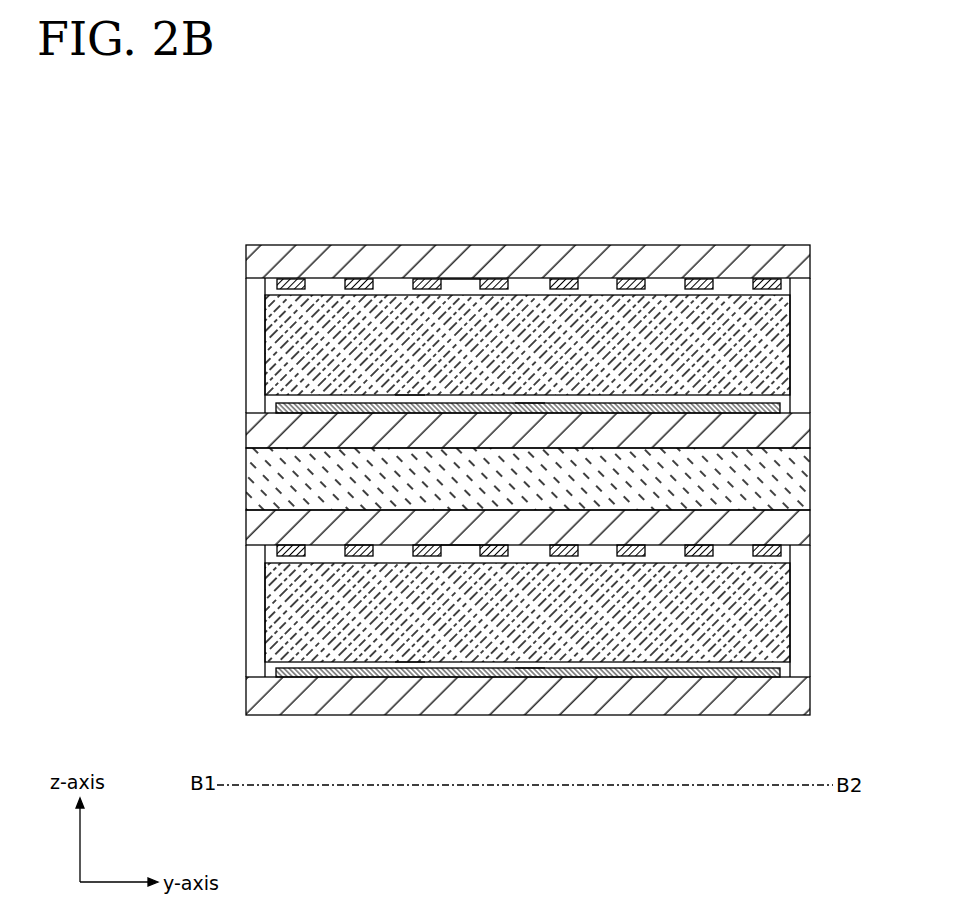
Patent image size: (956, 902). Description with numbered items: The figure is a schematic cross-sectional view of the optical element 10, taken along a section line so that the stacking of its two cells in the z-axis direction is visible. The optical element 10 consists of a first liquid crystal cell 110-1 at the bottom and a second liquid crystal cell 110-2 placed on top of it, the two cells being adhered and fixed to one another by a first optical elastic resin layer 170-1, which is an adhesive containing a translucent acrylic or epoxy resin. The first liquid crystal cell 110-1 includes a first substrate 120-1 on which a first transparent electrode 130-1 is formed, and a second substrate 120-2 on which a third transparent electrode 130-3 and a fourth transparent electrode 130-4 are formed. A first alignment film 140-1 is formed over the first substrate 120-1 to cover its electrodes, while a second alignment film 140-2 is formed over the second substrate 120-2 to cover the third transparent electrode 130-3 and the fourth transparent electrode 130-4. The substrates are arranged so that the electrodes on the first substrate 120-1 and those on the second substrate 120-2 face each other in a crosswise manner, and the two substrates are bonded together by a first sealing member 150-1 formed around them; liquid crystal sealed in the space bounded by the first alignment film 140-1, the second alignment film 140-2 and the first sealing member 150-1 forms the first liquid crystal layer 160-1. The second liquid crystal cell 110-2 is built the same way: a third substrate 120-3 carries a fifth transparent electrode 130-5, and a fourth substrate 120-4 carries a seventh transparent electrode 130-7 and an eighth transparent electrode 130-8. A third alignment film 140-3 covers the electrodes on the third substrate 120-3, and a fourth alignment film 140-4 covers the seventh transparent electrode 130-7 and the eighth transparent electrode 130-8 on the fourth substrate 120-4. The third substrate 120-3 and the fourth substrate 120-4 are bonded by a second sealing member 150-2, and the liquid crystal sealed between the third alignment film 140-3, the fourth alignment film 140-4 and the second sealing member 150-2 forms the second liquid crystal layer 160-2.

The optical element 10 is at (146, 142).
The first liquid crystal cell 110-1 is at (135, 510).
The second liquid crystal cell 110-2 is at (135, 243).
The first substrate 120-1 is at (246, 693).
The second substrate 120-2 is at (246, 527).
The third substrate 120-3 is at (246, 430).
The fourth substrate 120-4 is at (246, 262).
The first transparent electrode 130-1 is at (531, 667).
The third transparent electrode 130-3 is at (629, 558).
The fourth transparent electrode 130-4 is at (700, 558).
The fifth transparent electrode 130-5 is at (531, 401).
The seventh transparent electrode 130-7 is at (629, 290).
The eighth transparent electrode 130-8 is at (700, 290).
The first alignment film 140-1 is at (410, 664).
The second alignment film 140-2 is at (462, 558).
The third alignment film 140-3 is at (410, 398).
The fourth alignment film 140-4 is at (462, 292).
The first sealing member 150-1 is at (264, 610).
The second sealing member 150-2 is at (264, 345).
The first liquid crystal layer 160-1 is at (264, 645).
The second liquid crystal layer 160-2 is at (264, 379).
The first optical elastic resin layer 170-1 is at (246, 478).